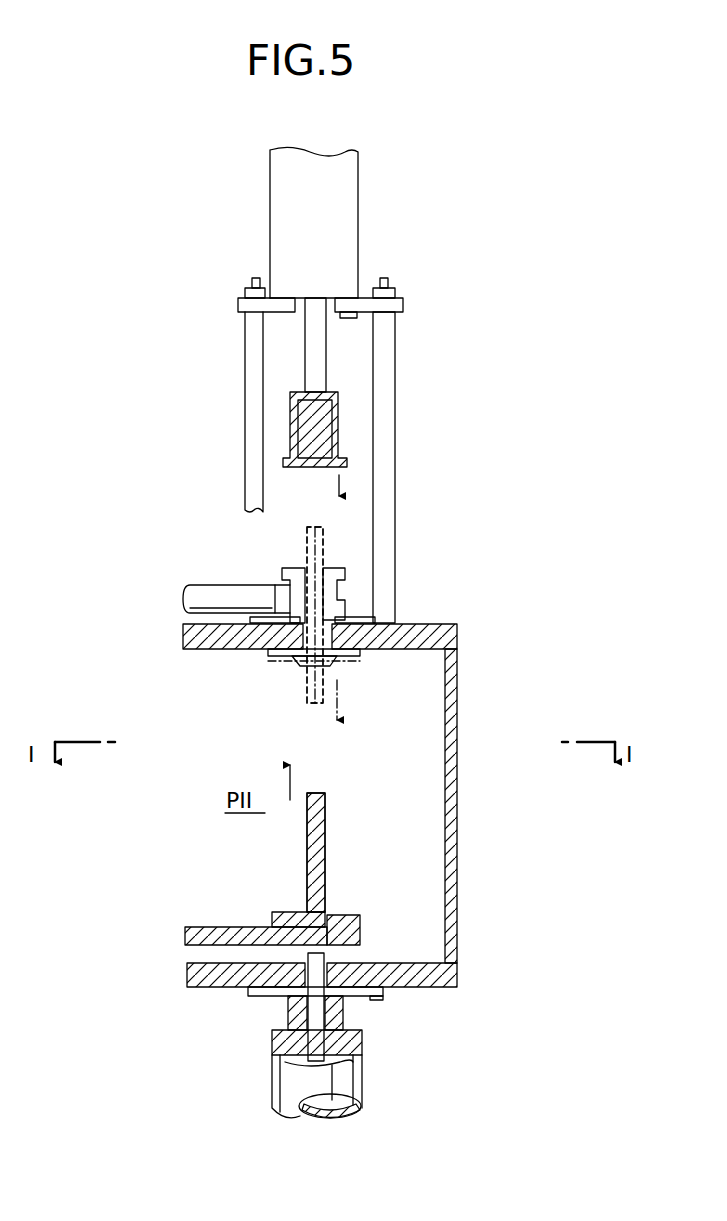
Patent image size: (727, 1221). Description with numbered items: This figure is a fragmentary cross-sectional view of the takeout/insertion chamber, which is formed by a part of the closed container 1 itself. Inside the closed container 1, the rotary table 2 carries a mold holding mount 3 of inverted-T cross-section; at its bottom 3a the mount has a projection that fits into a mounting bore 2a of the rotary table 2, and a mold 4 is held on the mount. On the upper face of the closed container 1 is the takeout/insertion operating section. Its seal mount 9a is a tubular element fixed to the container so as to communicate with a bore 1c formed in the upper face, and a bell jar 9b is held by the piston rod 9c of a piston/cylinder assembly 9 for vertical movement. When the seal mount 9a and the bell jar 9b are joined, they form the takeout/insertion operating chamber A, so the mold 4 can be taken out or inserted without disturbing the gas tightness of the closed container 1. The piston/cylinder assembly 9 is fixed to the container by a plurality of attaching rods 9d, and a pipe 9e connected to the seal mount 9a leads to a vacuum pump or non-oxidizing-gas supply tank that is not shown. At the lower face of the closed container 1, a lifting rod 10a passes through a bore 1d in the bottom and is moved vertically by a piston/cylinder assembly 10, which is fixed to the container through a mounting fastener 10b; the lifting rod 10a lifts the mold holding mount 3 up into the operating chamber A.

The closed container 1 is at (458, 785).
The bore 1c is at (300, 658).
The bore 1d is at (340, 963).
The rotary table 2 is at (215, 927).
The mounting bore 2a is at (330, 918).
The mold holding mount 3 is at (305, 558).
The bottom 3a is at (290, 912).
The mold 4 is at (343, 527).
The piston/cylinder assembly 9 is at (358, 205).
The seal mount 9a is at (345, 592).
The bell jar 9b is at (338, 410).
The piston rod 9c is at (327, 345).
The attaching rod 9d is at (245, 422).
The pipe 9e is at (205, 592).
The piston/cylinder assembly 10 is at (363, 1078).
The lifting rod 10a is at (305, 1000).
The mounting fastener 10b is at (345, 1005).
The takeout/insertion operating chamber A is at (310, 458).